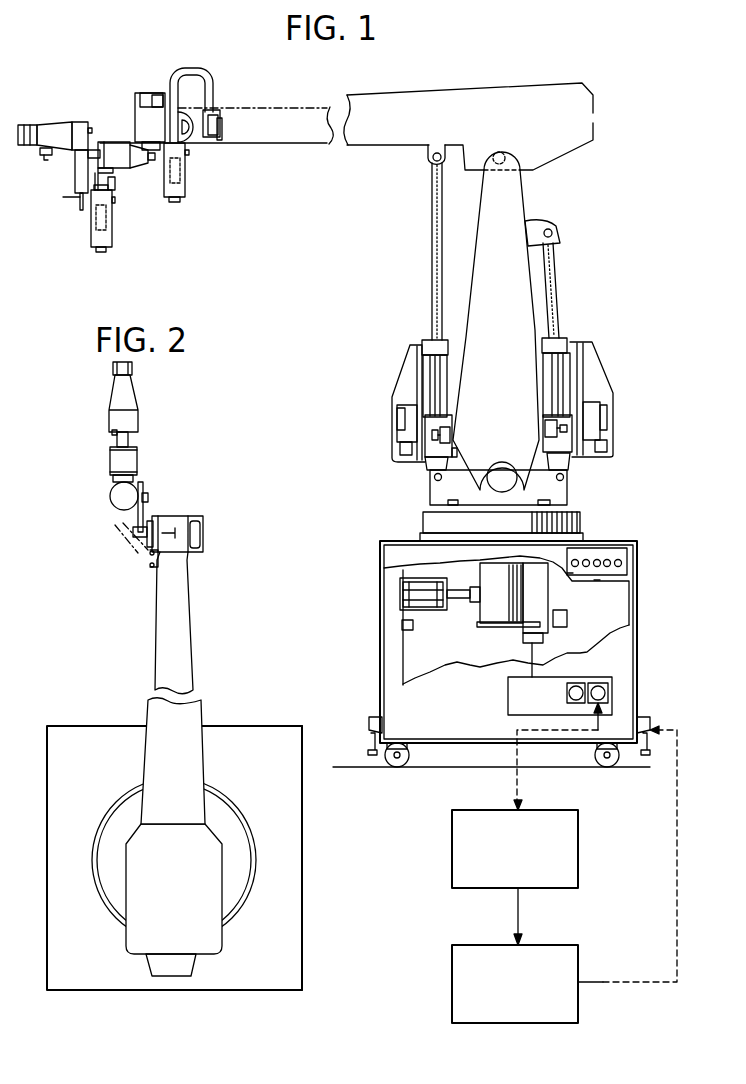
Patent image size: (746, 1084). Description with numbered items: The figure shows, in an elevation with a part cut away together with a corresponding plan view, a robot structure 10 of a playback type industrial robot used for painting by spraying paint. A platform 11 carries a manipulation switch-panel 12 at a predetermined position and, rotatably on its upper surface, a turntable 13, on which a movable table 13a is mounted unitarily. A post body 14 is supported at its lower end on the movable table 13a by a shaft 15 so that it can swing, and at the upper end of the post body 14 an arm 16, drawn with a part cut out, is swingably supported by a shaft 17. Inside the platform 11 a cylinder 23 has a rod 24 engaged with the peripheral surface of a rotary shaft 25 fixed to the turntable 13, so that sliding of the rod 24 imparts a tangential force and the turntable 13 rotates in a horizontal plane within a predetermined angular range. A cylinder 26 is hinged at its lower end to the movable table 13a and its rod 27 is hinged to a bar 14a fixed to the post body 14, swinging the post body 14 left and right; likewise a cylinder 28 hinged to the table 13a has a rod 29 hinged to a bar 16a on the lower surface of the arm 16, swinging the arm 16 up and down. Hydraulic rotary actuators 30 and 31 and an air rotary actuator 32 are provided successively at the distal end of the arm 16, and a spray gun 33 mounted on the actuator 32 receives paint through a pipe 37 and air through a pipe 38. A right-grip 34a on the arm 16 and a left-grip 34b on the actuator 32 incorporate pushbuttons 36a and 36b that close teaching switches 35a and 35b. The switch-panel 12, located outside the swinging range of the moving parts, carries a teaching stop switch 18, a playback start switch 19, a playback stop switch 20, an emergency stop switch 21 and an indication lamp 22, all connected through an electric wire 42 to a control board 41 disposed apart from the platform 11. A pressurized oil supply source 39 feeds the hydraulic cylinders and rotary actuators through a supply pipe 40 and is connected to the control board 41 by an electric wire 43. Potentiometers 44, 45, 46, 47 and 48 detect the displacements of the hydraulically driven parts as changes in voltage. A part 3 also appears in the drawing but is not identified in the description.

In FIG. 2, the base plate 3 is at (303, 824).
In FIG. 1, the robot structure 10 is at (601, 191).
In FIG. 2, the robot structure 10 is at (120, 607).
In FIG. 1, the platform 11 is at (378, 565).
In FIG. 2, the platform 11 is at (256, 727).
In FIG. 1, the manipulation switch-panel 12 is at (617, 565).
In FIG. 1, the turntable 13 is at (427, 520).
In FIG. 2, the turntable 13 is at (235, 896).
In FIG. 1, the movable table 13a is at (437, 490).
In FIG. 1, the post body 14 is at (529, 298).
In FIG. 1, the bar 14a is at (553, 238).
In FIG. 1, the shaft 15 is at (503, 462).
In FIG. 1, the arm 16 is at (320, 100).
In FIG. 2, the arm 16 is at (193, 594).
In FIG. 1, the bar 16a is at (430, 157).
In FIG. 1, the shaft 17 is at (497, 147).
In FIG. 1, the teaching stop switch 18 is at (569, 576).
In FIG. 1, the playback start switch 19 is at (597, 580).
In FIG. 1, the playback stop switch 20 is at (598, 558).
In FIG. 1, the emergency stop switch 21 is at (608, 558).
In FIG. 1, the indication lamp 22 is at (623, 563).
In FIG. 1, the cylinder 23 is at (410, 592).
In FIG. 1, the rod 24 is at (457, 600).
In FIG. 1, the rotary shaft 25 is at (493, 610).
In FIG. 1, the cylinder 26 is at (570, 404).
In FIG. 1, the rod 27 is at (553, 290).
In FIG. 1, the cylinder 28 is at (445, 405).
In FIG. 1, the rod 29 is at (430, 210).
In FIG. 1, the hydraulic rotary actuator 30 is at (193, 101).
In FIG. 2, the hydraulic rotary actuator 30 is at (182, 521).
In FIG. 1, the hydraulic rotary actuator 31 is at (132, 102).
In FIG. 2, the hydraulic rotary actuator 31 is at (113, 495).
In FIG. 1, the air rotary actuator 32 is at (115, 170).
In FIG. 2, the air rotary actuator 32 is at (137, 463).
In FIG. 1, the spray gun 33 is at (55, 123).
In FIG. 2, the spray gun 33 is at (138, 400).
In FIG. 1, the right-grip 34a is at (183, 153).
In FIG. 1, the left-grip 34b is at (101, 252).
In FIG. 1, the teaching switch 35a is at (187, 183).
In FIG. 1, the teaching switch 35b is at (107, 215).
In FIG. 1, the pushbutton 36a is at (198, 183).
In FIG. 1, the pushbutton 36b is at (104, 234).
In FIG. 1, the pipe 37 is at (82, 212).
In FIG. 1, the pipe 38 is at (50, 157).
In FIG. 1, the pressurized oil supply source 39 is at (462, 945).
In FIG. 1, the supply pipe 40 is at (607, 980).
In FIG. 1, the control board 41 is at (580, 825).
In FIG. 1, the electric wire 42 is at (522, 775).
In FIG. 1, the electric wire 43 is at (518, 917).
In FIG. 1, the potentiometer 44 is at (560, 703).
In FIG. 1, the potentiometer 45 is at (545, 428).
In FIG. 1, the potentiometer 46 is at (452, 437).
In FIG. 2, the potentiometer 47 is at (203, 533).
In FIG. 1, the potentiometer 48 is at (155, 97).